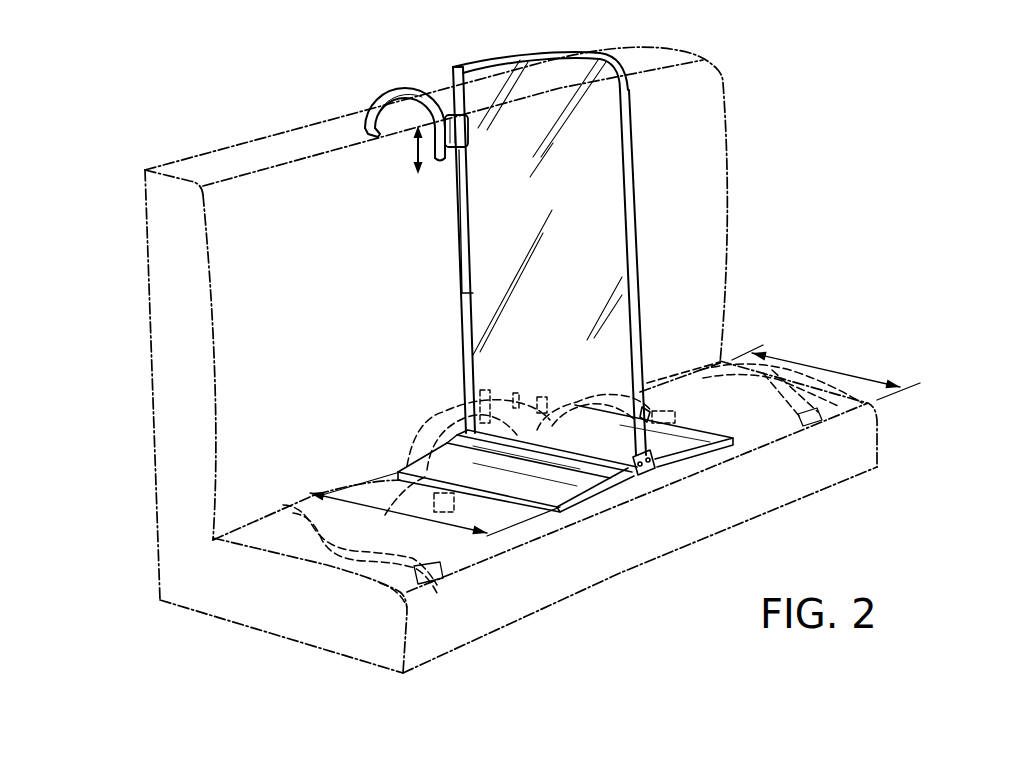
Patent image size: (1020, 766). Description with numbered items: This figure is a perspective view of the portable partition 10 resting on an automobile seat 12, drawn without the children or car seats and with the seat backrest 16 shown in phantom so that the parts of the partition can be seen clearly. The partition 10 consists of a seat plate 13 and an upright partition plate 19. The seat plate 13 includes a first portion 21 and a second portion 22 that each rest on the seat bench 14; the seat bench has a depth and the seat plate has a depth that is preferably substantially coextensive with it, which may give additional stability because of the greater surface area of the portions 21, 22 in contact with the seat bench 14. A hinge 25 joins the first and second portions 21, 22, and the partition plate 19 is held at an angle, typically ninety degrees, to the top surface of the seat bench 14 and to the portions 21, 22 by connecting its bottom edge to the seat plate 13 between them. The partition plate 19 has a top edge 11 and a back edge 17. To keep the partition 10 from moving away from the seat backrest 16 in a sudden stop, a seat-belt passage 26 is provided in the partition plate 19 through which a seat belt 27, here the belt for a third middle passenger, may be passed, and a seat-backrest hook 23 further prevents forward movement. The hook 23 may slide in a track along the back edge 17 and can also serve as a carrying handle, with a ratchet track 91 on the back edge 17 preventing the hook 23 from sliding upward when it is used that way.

The portable partition 10 is at (594, 32).
The top edge 11 is at (546, 53).
The automobile seat 12 is at (128, 394).
The seat plate 13 is at (685, 430).
The seat bench 14 is at (553, 586).
The seat backrest 16 is at (152, 250).
The back edge 17 is at (462, 256).
The partition plate 19 is at (588, 265).
The first portion 21 is at (608, 493).
The second portion 22 is at (708, 455).
The seat-backrest hook 23 is at (398, 85).
The hinge 25 is at (658, 483).
The seat-belt passage 26 is at (480, 395).
The seat belt 27 is at (447, 418).
The ratchet track 91 is at (456, 168).